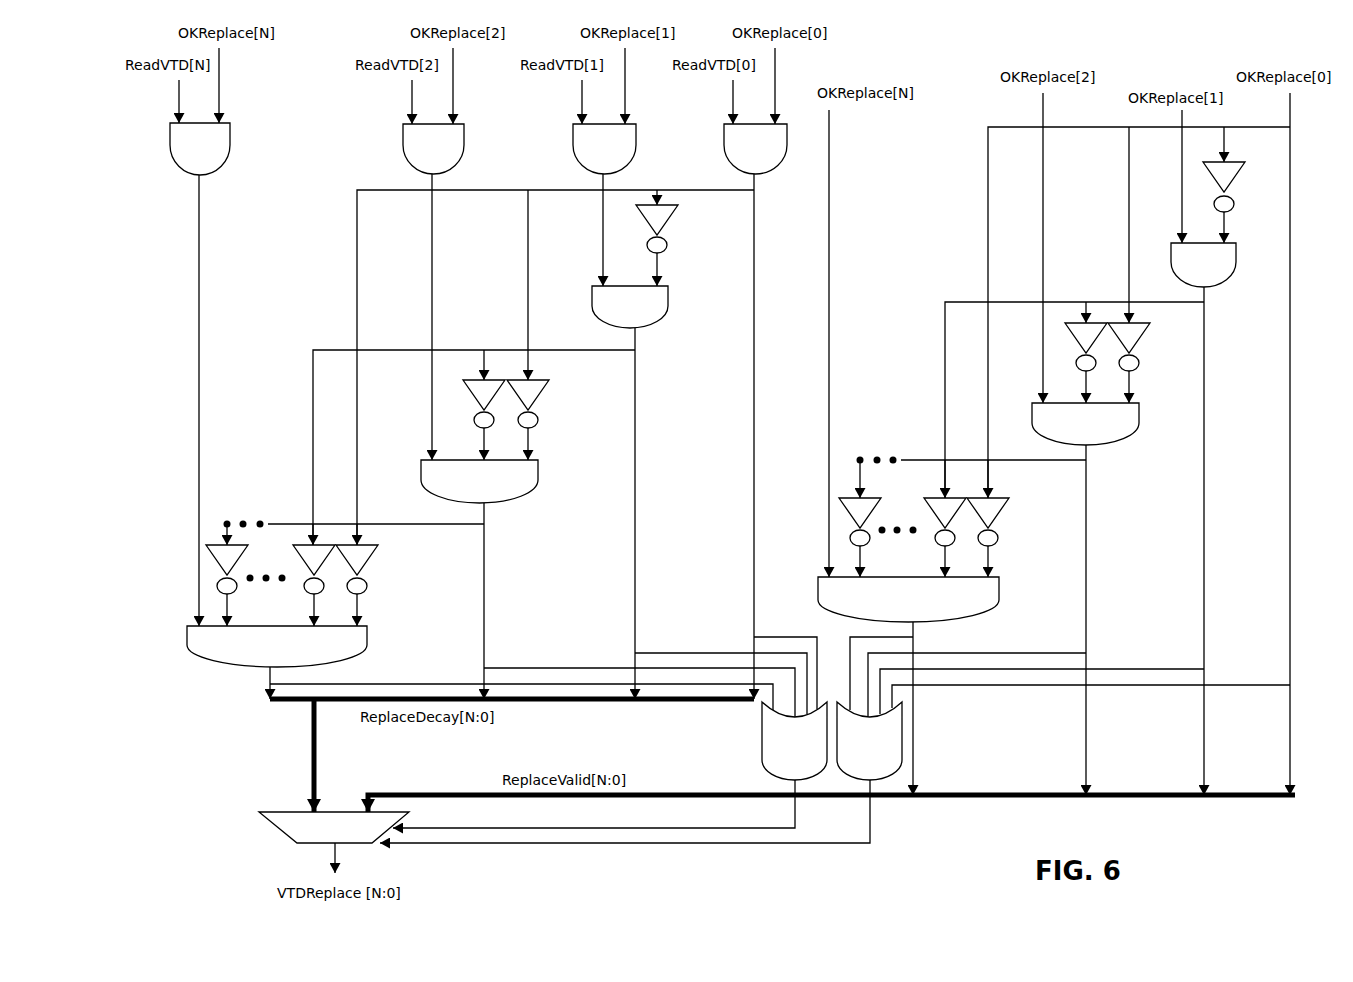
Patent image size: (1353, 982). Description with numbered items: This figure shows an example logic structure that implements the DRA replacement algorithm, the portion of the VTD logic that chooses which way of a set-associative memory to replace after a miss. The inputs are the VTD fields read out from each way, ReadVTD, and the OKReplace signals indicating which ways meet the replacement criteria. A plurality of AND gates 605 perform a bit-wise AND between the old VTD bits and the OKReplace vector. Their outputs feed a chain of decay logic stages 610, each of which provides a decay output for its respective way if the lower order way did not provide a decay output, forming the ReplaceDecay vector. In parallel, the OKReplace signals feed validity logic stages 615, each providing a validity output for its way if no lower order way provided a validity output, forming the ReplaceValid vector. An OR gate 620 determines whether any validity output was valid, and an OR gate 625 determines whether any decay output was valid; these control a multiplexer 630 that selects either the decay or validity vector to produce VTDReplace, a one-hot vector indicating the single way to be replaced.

The AND gates 605 is at (218, 157).
The decay logic stages 610 is at (571, 318).
The validity logic stages 615 is at (1172, 287).
The OR gate 620 is at (903, 735).
The OR gate 625 is at (756, 736).
The multiplexer 630 is at (258, 829).